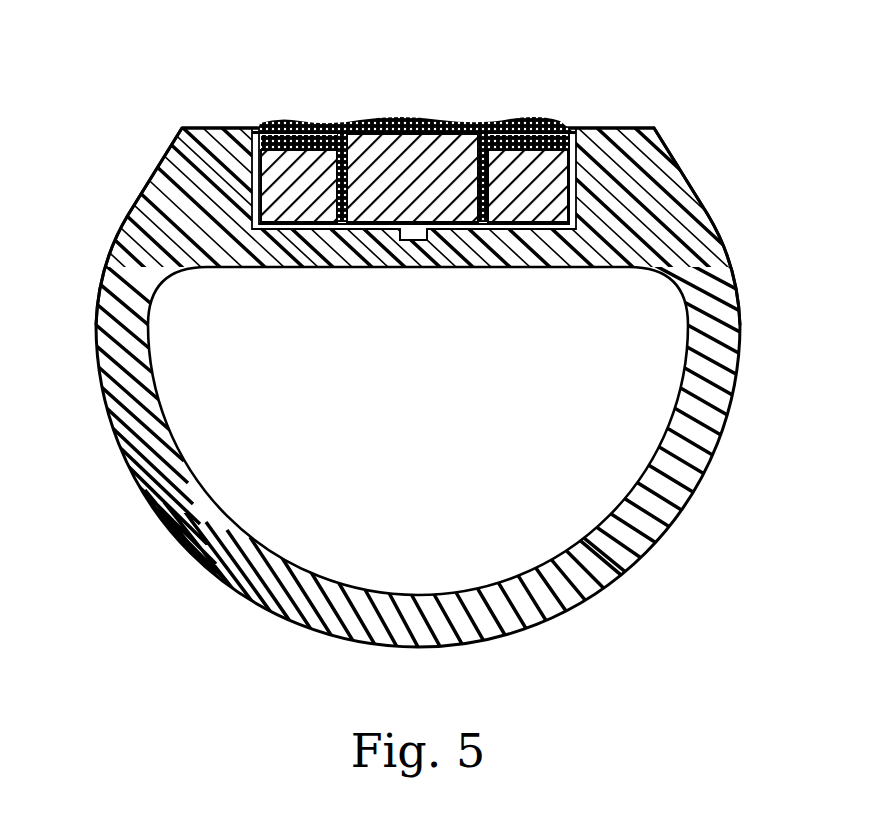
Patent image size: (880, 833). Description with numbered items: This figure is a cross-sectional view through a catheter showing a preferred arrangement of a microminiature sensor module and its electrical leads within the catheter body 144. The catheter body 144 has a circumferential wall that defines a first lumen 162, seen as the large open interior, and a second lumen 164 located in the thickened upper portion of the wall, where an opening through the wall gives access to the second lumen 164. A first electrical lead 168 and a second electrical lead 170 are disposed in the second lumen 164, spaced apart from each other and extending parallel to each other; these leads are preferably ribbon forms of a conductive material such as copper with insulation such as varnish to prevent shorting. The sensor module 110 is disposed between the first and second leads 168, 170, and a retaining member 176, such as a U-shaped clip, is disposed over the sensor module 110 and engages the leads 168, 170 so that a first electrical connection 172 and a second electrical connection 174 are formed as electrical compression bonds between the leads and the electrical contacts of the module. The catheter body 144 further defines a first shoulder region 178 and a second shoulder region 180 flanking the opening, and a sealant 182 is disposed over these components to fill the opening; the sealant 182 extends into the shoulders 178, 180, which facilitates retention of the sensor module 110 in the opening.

The sensor module 110 is at (433, 125).
The catheter body 144 is at (190, 557).
The first lumen 162 is at (440, 488).
The second lumen 164 is at (573, 130).
The first electrical lead 168 is at (215, 128).
The second electrical lead 170 is at (580, 170).
The first electrical connection 172 is at (347, 232).
The second electrical connection 174 is at (486, 229).
The retaining member 176 is at (314, 128).
The first shoulder region 178 is at (252, 186).
The second shoulder region 180 is at (580, 213).
The sealant 182 is at (507, 120).